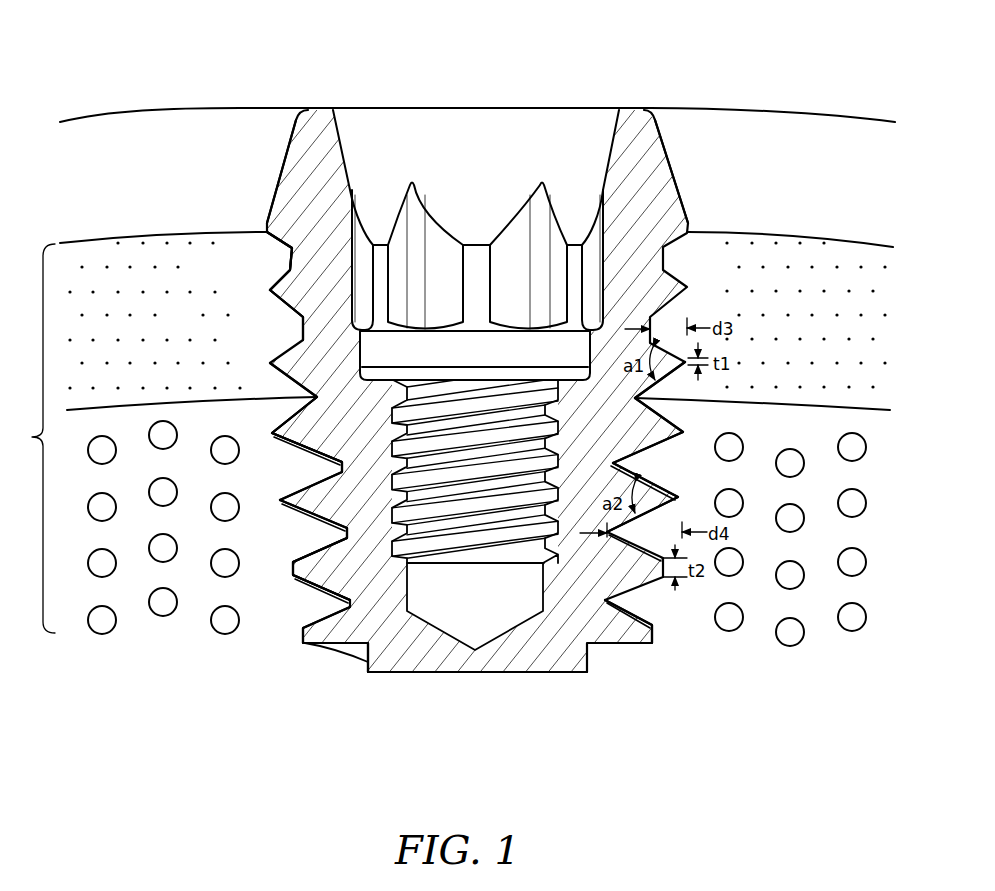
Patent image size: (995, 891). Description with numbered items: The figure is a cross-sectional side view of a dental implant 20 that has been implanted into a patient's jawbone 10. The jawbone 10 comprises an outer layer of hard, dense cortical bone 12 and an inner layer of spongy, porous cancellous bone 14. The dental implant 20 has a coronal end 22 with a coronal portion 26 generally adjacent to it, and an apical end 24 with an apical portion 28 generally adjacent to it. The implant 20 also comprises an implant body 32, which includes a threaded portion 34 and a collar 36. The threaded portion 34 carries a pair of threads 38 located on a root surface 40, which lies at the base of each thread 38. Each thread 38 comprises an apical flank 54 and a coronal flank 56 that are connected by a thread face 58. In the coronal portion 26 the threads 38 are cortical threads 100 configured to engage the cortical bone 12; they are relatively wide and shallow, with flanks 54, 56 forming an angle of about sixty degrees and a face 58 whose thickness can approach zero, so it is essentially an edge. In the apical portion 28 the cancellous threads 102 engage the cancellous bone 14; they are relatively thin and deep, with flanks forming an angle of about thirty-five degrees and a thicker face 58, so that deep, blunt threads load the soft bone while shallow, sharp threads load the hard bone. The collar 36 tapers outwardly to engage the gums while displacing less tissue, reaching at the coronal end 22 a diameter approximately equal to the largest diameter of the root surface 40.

The jawbone 10 is at (29, 438).
The cortical bone 12 is at (137, 252).
The cancellous bone 14 is at (130, 583).
The dental implant 20 is at (420, 702).
The coronal end 22 is at (540, 108).
The apical end 24 is at (557, 673).
The coronal portion 26 is at (262, 318).
The apical portion 28 is at (222, 531).
The implant body 32 is at (343, 442).
The threaded portion 34 is at (677, 477).
The collar 36 is at (286, 167).
The threads 38 is at (275, 582).
The root surface 40 is at (300, 610).
The apical flank 54 is at (297, 595).
The coronal flank 56 is at (307, 553).
The thread face 58 is at (288, 565).
The cortical threads 100 is at (285, 275).
The cancellous threads 102 is at (625, 623).